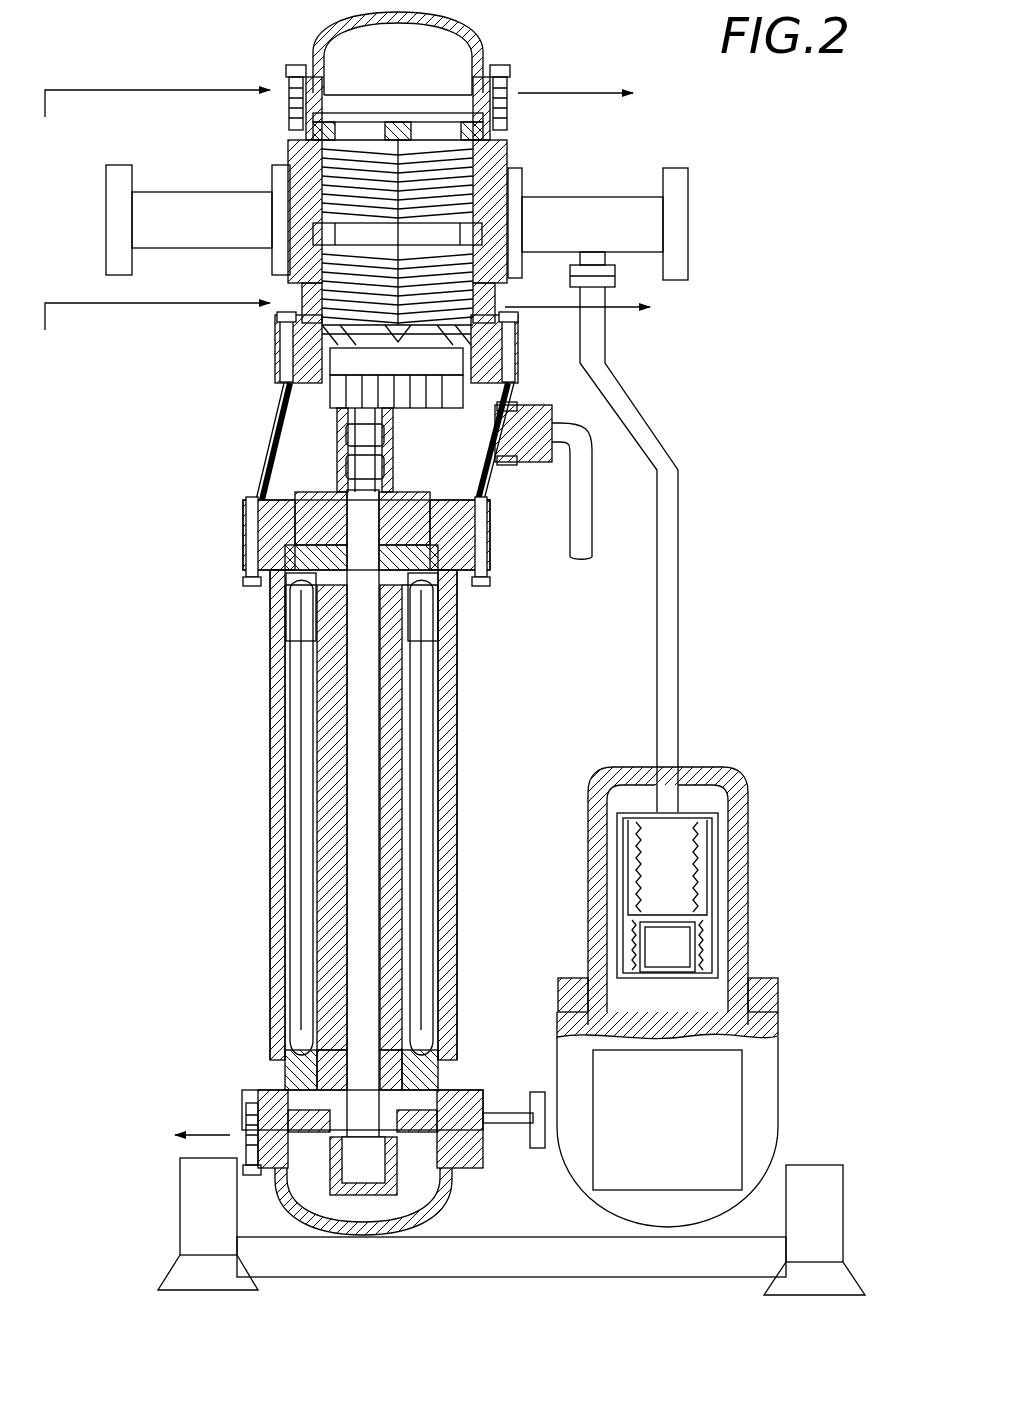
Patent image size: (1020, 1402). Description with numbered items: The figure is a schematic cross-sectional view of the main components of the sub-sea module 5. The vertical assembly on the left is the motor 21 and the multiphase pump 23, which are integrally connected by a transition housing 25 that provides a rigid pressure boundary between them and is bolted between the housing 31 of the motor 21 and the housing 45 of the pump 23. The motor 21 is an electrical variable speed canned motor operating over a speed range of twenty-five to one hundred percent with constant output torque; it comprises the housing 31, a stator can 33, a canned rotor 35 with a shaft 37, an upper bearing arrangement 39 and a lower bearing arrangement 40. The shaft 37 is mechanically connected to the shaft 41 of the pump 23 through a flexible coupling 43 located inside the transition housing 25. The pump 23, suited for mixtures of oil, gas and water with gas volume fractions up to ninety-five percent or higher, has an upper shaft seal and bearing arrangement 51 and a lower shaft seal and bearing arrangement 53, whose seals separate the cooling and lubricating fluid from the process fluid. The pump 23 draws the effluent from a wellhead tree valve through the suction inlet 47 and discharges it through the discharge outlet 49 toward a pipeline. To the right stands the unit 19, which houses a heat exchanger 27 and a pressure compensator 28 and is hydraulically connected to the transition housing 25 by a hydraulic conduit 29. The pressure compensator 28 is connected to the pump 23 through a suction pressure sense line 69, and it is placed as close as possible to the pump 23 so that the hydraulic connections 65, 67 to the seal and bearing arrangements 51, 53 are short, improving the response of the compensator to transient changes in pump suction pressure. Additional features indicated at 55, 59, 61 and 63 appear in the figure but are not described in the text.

The sub-sea module 5 is at (735, 388).
The unit 19 is at (785, 808).
The motor 21 is at (245, 830).
The multiphase pump 23 is at (510, 144).
The transition housing 25 is at (280, 443).
The heat exchanger 27 is at (768, 1075).
The pressure compensator 28 is at (710, 862).
The hydraulic conduit 29 is at (590, 528).
The housing 31 is at (458, 704).
The stator can 33 is at (405, 768).
The canned rotor 35 is at (318, 765).
The shaft 37 is at (372, 822).
The upper bearing arrangement 39 is at (430, 604).
The lower bearing arrangement 40 is at (400, 1065).
The shaft 41 is at (390, 440).
The flexible coupling 43 is at (388, 456).
The housing 45 is at (296, 152).
The suction inlet 47 is at (108, 180).
The discharge outlet 49 is at (690, 185).
The upper shaft seal and bearing arrangement 51 is at (292, 103).
The lower shaft seal and bearing arrangement 53 is at (290, 348).
The tube end 55 is at (310, 1040).
The flow arrow 59 is at (208, 1135).
The flow arrow 61 is at (74, 303).
The flow arrow 63 is at (62, 90).
The hydraulic connection 65 is at (602, 92).
The hydraulic connection 67 is at (630, 310).
The suction pressure sense line 69 is at (676, 580).